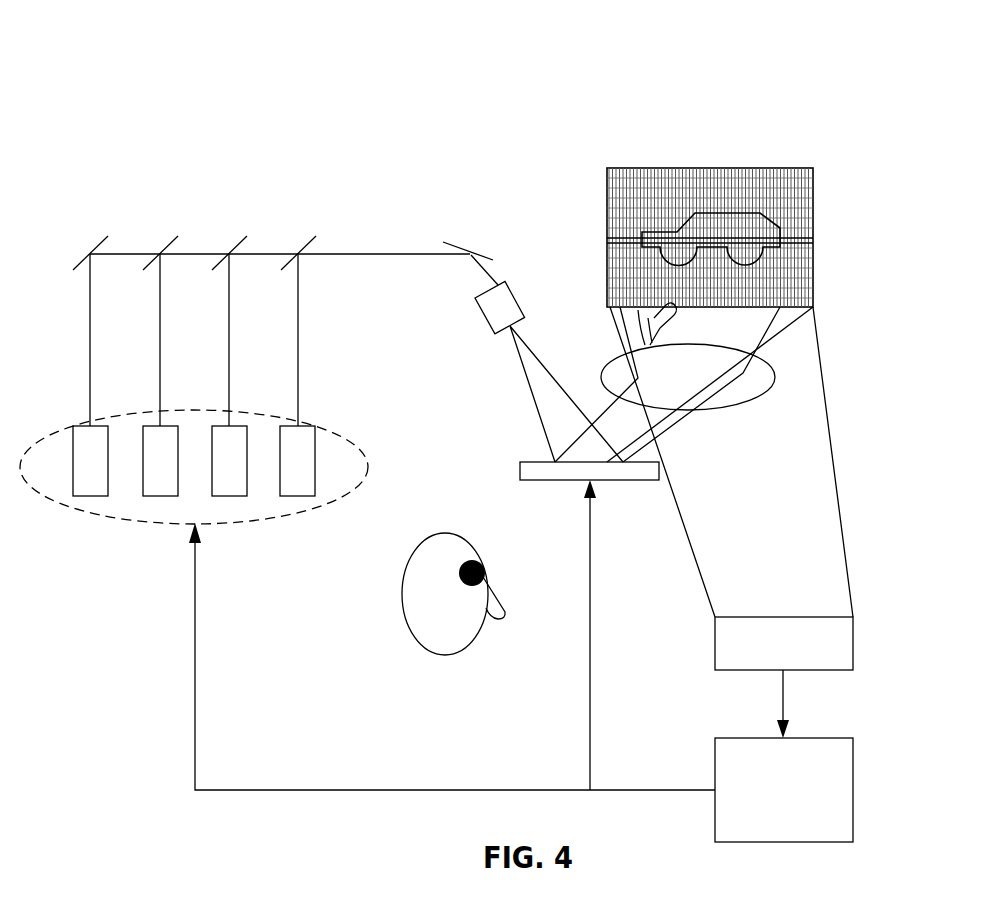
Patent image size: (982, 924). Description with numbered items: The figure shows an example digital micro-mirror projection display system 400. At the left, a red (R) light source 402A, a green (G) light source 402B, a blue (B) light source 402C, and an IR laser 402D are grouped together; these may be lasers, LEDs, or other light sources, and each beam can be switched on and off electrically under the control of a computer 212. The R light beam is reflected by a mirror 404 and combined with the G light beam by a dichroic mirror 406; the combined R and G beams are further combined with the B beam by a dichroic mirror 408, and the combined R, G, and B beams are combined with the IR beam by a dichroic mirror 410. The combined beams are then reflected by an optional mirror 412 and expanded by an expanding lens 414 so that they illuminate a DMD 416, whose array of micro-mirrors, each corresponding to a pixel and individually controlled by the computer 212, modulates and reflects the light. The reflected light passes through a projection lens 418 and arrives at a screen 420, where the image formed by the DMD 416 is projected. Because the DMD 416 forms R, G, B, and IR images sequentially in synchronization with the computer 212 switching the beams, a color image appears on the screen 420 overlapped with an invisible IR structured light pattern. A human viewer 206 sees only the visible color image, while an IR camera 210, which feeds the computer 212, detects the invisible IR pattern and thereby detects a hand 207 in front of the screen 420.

The projection display system 400 is at (309, 70).
The red (R) light source 402A is at (133, 410).
The green (G) light source 402B is at (172, 424).
The blue (B) light source 402C is at (272, 410).
The IR laser 402D is at (309, 424).
The mirror 404 is at (97, 238).
The dichroic mirror 406 is at (167, 238).
The dichroic mirror 408 is at (236, 238).
The dichroic mirror 410 is at (305, 238).
The optional mirror 412 is at (485, 247).
The expanding lens 414 is at (517, 293).
The DMD 416 is at (518, 467).
The projection lens 418 is at (767, 393).
The screen 420 is at (667, 168).
The hand 207 is at (676, 318).
The human viewer 206 is at (408, 573).
The IR camera 210 is at (697, 633).
The computer 212 is at (715, 762).